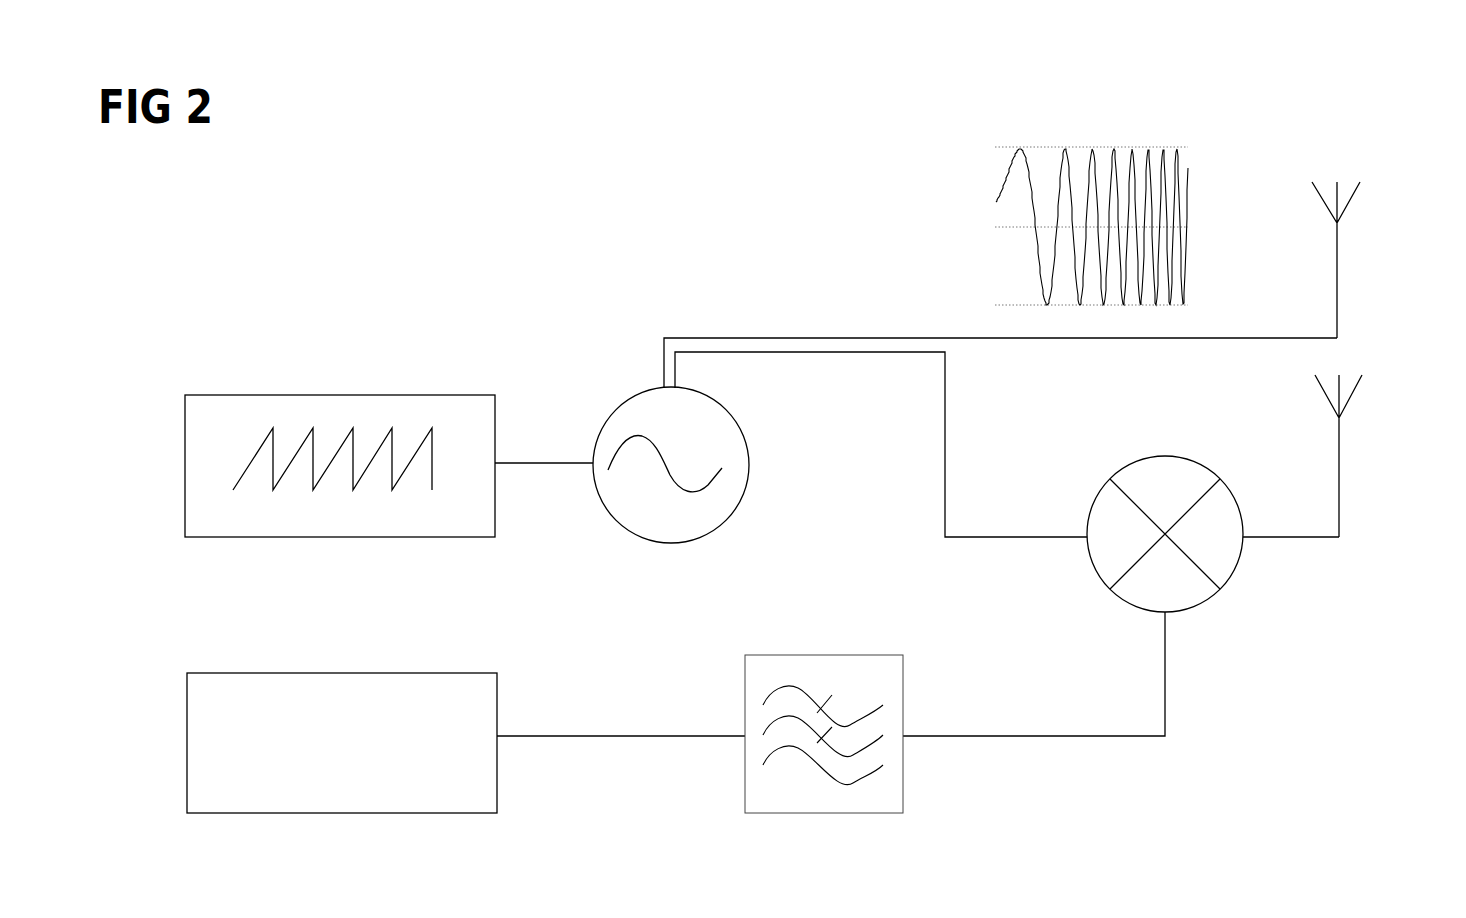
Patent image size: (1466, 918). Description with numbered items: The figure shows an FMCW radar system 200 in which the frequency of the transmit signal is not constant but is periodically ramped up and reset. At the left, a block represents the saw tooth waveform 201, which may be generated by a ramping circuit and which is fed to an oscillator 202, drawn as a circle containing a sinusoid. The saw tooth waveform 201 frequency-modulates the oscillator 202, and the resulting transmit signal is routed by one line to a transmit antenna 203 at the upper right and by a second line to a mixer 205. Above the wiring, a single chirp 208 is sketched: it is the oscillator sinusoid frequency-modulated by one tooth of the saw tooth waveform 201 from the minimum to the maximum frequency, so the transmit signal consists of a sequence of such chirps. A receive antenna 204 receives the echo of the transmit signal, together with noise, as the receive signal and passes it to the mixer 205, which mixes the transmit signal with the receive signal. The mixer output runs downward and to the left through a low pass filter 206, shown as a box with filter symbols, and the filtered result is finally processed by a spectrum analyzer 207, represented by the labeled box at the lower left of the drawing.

The FMCW radar system 200 is at (1338, 97).
The saw tooth waveform 201 is at (417, 395).
The oscillator 202 is at (675, 543).
The transmit antenna 203 is at (1353, 194).
The receive antenna 204 is at (1355, 393).
The mixer 205 is at (1130, 462).
The low pass filter 206 is at (852, 655).
The spectrum analyzer 207 is at (472, 673).
The chirp 208 is at (1033, 142).